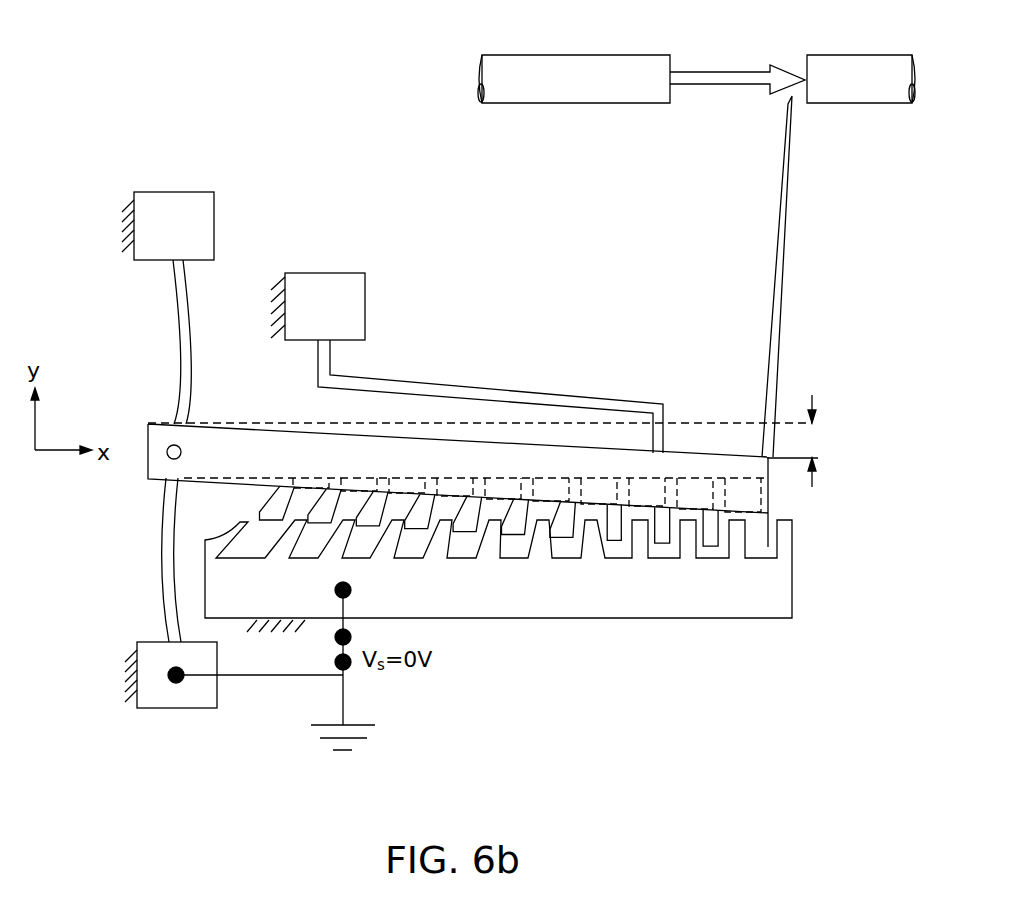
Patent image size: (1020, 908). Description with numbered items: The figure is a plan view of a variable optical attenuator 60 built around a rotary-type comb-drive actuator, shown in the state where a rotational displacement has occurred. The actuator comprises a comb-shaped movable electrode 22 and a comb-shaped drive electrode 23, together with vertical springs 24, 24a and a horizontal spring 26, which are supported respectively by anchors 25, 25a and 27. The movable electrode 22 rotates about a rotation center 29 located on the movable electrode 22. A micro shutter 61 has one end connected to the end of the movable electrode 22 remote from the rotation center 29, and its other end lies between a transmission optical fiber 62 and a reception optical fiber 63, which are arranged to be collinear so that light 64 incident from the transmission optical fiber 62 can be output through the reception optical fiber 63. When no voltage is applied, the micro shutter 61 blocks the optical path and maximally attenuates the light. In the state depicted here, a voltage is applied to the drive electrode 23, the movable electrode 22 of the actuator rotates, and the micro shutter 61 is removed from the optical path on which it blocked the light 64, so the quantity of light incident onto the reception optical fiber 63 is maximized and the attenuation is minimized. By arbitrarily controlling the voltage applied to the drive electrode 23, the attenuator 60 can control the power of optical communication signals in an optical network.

The comb-shaped movable electrode 22 is at (702, 462).
The comb-shaped drive electrode 23 is at (608, 621).
The vertical spring 24 is at (174, 300).
The vertical spring 24a is at (160, 574).
The anchor 25 is at (157, 206).
The anchor 25a is at (137, 704).
The horizontal spring 26 is at (473, 391).
The anchor 27 is at (325, 287).
The rotation center 29 is at (168, 458).
The variable optical attenuator 60 is at (424, 152).
The micro shutter 61 is at (807, 276).
The transmission optical fiber 62 is at (603, 100).
The reception optical fiber 63 is at (870, 95).
The light 64 is at (725, 83).